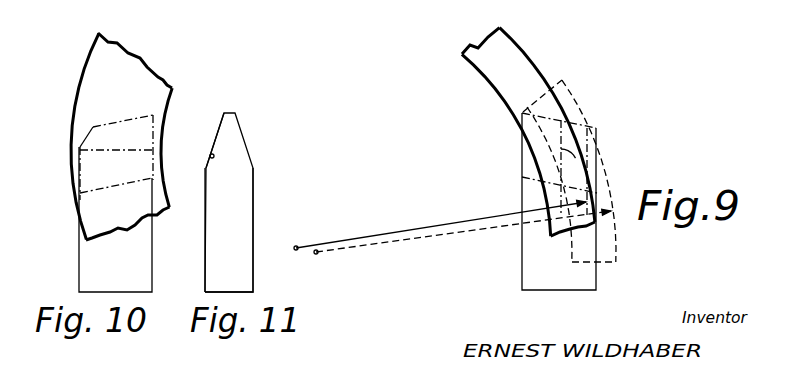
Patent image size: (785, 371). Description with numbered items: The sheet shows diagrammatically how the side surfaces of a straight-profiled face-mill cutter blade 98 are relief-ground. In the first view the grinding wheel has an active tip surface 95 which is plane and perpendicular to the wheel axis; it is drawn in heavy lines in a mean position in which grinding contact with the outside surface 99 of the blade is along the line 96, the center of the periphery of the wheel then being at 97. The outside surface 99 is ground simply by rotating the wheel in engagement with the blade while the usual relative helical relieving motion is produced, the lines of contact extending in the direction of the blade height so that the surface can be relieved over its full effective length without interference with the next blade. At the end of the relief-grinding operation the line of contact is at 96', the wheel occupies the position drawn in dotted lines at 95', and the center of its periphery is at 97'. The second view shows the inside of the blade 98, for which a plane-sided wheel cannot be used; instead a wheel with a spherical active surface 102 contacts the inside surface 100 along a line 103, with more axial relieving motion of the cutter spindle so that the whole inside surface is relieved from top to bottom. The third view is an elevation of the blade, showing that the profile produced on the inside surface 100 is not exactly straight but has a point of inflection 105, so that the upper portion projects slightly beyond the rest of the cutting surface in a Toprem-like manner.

In FIG. 9, the active tip surface of grinding wheel 95 is at (522, 132).
In FIG. 9, the grinding wheel in end position 95' is at (589, 178).
In FIG. 9, the line of grinding contact 96 is at (572, 165).
In FIG. 9, the line of contact at end of operation 96' is at (620, 171).
In FIG. 9, the center of wheel periphery 97 is at (439, 225).
In FIG. 9, the center of wheel periphery in end position 97' is at (462, 250).
In FIG. 10, the blade 98 is at (143, 253).
In FIG. 11, the blade 98 is at (210, 256).
In FIG. 9, the blade 98 is at (522, 268).
In FIG. 11, the outside surface 99 is at (250, 152).
In FIG. 9, the outside surface 99 is at (522, 165).
In FIG. 10, the inside surface 100 is at (93, 177).
In FIG. 11, the inside surface 100 is at (218, 140).
In FIG. 10, the active surface of spherical grinding wheel 102 is at (164, 86).
In FIG. 10, the line of grinding contact 103 is at (100, 151).
In FIG. 11, the point of inflection 105 is at (210, 156).